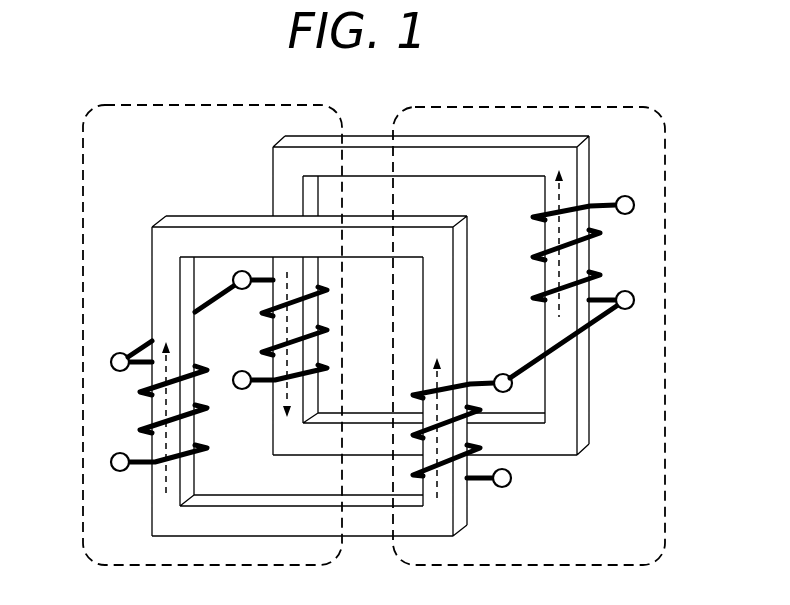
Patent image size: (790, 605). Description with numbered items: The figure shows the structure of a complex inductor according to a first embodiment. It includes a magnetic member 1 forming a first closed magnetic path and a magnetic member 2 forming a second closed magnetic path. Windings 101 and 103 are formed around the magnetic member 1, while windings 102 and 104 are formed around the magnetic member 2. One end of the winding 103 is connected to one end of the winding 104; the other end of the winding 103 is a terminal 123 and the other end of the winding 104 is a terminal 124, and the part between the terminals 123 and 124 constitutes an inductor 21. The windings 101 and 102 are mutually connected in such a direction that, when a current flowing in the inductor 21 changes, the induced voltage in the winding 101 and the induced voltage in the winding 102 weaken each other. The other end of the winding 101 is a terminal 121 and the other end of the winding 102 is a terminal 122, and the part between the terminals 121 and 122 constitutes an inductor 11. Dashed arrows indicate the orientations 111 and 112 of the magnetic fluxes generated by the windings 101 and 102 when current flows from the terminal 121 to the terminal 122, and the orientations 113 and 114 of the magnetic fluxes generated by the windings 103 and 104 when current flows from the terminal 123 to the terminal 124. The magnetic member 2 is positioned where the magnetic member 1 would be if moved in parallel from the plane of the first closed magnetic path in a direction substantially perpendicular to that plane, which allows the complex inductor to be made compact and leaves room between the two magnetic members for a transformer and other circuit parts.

The magnetic member 1 is at (163, 219).
The magnetic member 2 is at (274, 143).
The inductor 11 is at (80, 263).
The inductor 21 is at (667, 326).
The winding 101 is at (208, 455).
The winding 102 is at (268, 347).
The winding 103 is at (470, 427).
The winding 104 is at (537, 255).
The orientation of magnetic flux 111 is at (160, 482).
The orientation of magnetic flux 112 is at (280, 397).
The orientation of magnetic flux 113 is at (439, 485).
The orientation of magnetic flux 114 is at (558, 198).
The terminal 121 is at (118, 454).
The terminal 122 is at (240, 371).
The terminal 123 is at (512, 482).
The terminal 124 is at (629, 194).